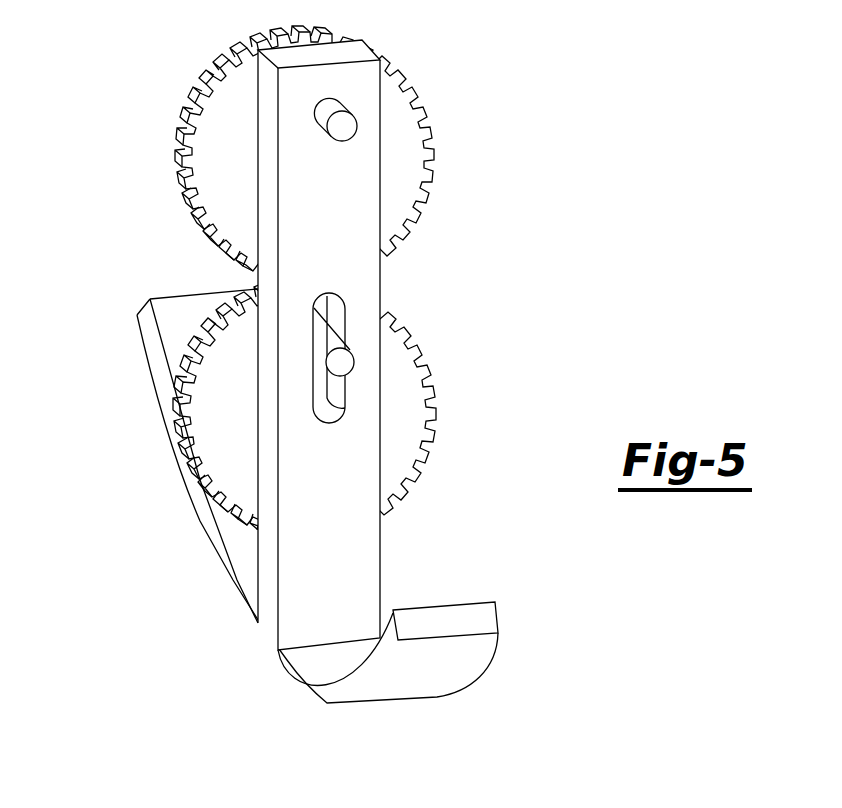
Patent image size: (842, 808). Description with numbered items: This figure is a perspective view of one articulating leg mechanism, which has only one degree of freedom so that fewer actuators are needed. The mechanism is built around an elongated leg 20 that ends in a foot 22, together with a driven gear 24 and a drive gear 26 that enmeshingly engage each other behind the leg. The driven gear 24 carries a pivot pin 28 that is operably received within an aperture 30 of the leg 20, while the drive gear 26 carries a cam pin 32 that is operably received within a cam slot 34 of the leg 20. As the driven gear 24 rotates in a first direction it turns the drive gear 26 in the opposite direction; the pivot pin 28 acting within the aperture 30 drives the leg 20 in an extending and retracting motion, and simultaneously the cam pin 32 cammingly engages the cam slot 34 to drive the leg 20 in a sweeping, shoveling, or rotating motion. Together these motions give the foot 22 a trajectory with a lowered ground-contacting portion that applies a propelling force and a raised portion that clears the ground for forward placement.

The leg 20 is at (340, 216).
The foot 22 is at (462, 615).
The driven gear 24 is at (427, 118).
The drive gear 26 is at (436, 397).
The pivot pin 28 is at (342, 126).
The aperture 30 is at (313, 104).
The cam pin 32 is at (346, 359).
The cam slot 34 is at (315, 387).